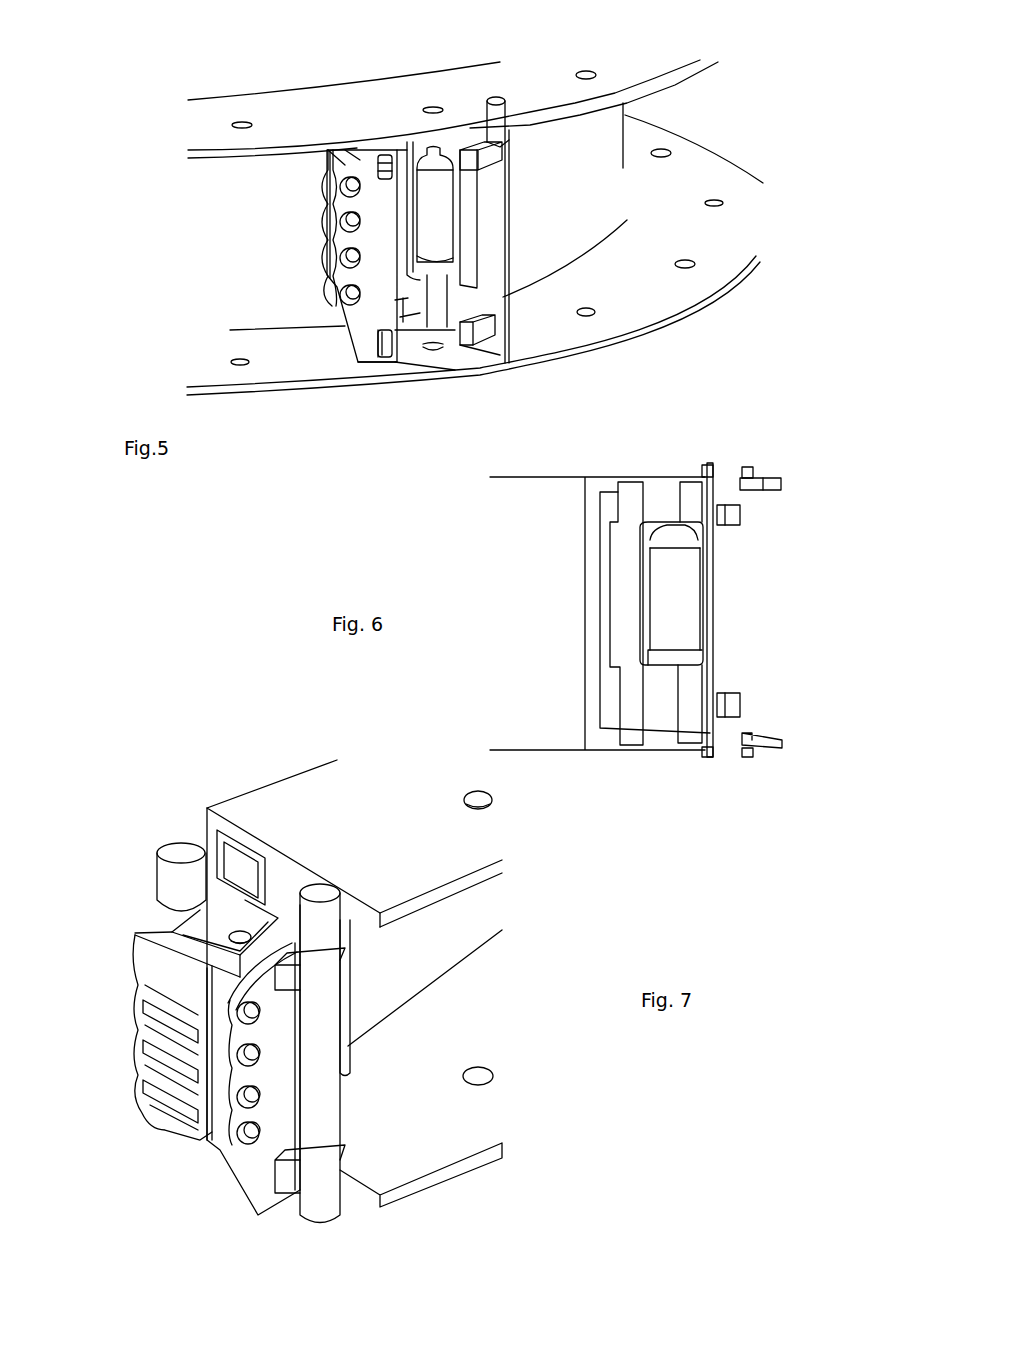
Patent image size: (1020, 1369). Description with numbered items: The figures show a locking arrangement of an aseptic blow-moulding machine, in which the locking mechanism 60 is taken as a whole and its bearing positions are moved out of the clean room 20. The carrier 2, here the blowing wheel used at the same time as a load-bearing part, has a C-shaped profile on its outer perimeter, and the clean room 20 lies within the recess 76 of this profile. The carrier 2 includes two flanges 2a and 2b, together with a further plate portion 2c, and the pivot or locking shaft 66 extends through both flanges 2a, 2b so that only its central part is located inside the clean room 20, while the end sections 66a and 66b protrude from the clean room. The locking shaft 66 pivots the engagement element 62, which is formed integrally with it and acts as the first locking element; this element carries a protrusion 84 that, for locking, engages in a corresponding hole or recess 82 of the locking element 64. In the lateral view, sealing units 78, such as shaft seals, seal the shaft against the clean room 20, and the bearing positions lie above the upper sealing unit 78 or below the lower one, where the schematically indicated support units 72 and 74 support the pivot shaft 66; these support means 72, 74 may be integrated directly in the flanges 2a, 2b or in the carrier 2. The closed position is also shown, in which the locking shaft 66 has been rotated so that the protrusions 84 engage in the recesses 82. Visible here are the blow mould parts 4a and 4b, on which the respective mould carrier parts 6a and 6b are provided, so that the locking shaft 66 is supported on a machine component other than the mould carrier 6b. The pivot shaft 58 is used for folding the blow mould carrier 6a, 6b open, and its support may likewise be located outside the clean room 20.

In FIG. 5, the carrier 2 is at (652, 172).
In FIG. 5, the flange 2a is at (542, 93).
In FIG. 7, the flange 2a is at (363, 867).
In FIG. 5, the flange 2b is at (660, 307).
In FIG. 7, the flange 2b is at (387, 1180).
In FIG. 7, the plate portion 2c is at (388, 978).
In FIG. 7, the blow mould part 4a is at (217, 958).
In FIG. 5, the blow mould part 4b is at (445, 207).
In FIG. 6, the blow mould part 4b is at (680, 585).
In FIG. 5, the mould carrier part 6a is at (323, 208).
In FIG. 7, the mould carrier part 6a is at (168, 1003).
In FIG. 7, the mould carrier part 6b is at (267, 900).
In FIG. 5, the clean room 20 is at (668, 239).
In FIG. 7, the pivot shaft 58 is at (180, 882).
In FIG. 5, the locking mechanism 60 is at (446, 247).
In FIG. 7, the locking mechanism 60 is at (327, 980).
In FIG. 5, the engagement element 62 is at (490, 330).
In FIG. 7, the engagement element 62 is at (302, 1180).
In FIG. 5, the locking element 64 is at (367, 310).
In FIG. 7, the locking element 64 is at (265, 1075).
In FIG. 5, the locking shaft 66 is at (492, 262).
In FIG. 6, the locking shaft 66 is at (722, 632).
In FIG. 7, the locking shaft 66 is at (330, 1100).
In FIG. 5, the end section of the locking shaft 66a is at (503, 103).
In FIG. 5, the end section of the locking shaft 66b is at (503, 372).
In FIG. 6, the support unit 72 is at (748, 466).
In FIG. 6, the support unit 74 is at (748, 757).
In FIG. 5, the recess 76 is at (652, 275).
In FIG. 6, the sealing unit 78 is at (745, 492).
In FIG. 5, the recess 82 is at (393, 352).
In FIG. 5, the protrusion 84 is at (475, 345).
In FIG. 6, the protrusion 84 is at (730, 700).